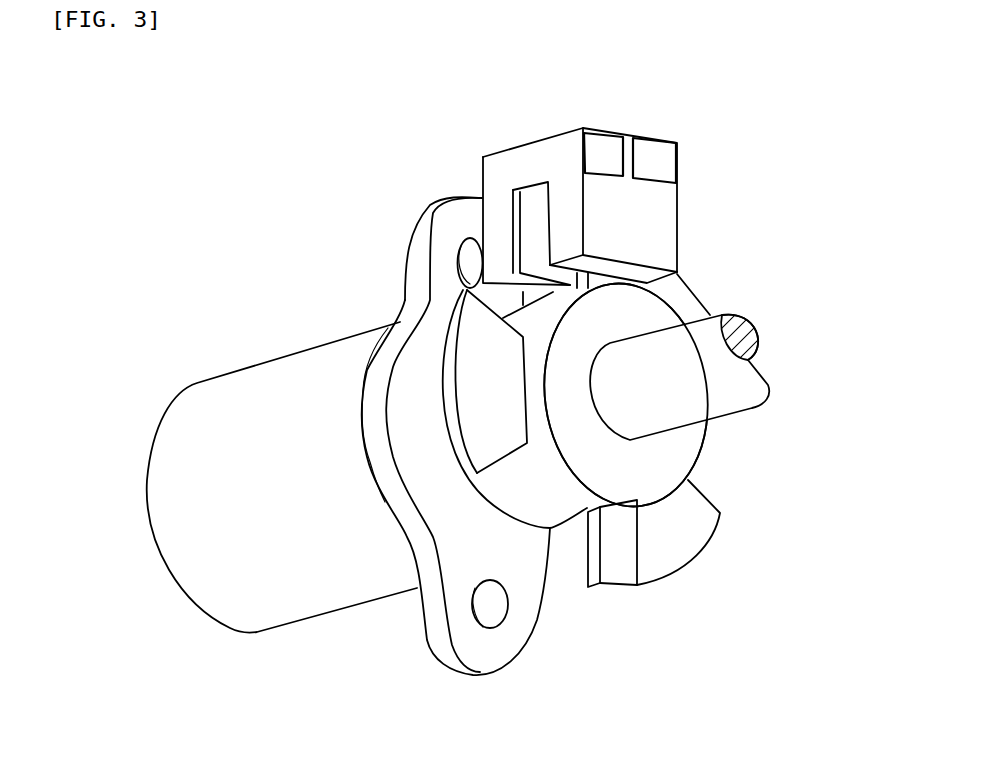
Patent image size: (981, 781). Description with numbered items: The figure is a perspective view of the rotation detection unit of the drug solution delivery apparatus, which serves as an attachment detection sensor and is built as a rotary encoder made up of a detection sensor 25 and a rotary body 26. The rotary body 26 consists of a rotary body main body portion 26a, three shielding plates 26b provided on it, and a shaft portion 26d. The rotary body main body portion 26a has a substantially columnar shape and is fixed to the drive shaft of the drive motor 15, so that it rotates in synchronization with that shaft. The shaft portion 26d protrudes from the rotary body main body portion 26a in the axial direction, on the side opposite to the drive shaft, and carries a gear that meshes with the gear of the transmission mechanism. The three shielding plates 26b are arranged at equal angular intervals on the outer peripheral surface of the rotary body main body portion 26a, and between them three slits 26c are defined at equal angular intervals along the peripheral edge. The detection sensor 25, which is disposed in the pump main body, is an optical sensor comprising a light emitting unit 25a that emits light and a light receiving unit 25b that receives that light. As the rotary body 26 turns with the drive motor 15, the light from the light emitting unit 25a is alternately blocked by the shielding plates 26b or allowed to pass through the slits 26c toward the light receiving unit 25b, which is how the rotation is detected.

The drive motor 15 is at (227, 603).
The detection sensor 25 is at (540, 160).
The light emitting unit 25a is at (513, 210).
The light receiving unit 25b is at (563, 224).
The rotary body 26 is at (785, 412).
The rotary body main body portion 26a is at (687, 445).
The shielding plates 26b is at (523, 415).
The slits 26c is at (523, 503).
The shaft portion 26d is at (715, 318).